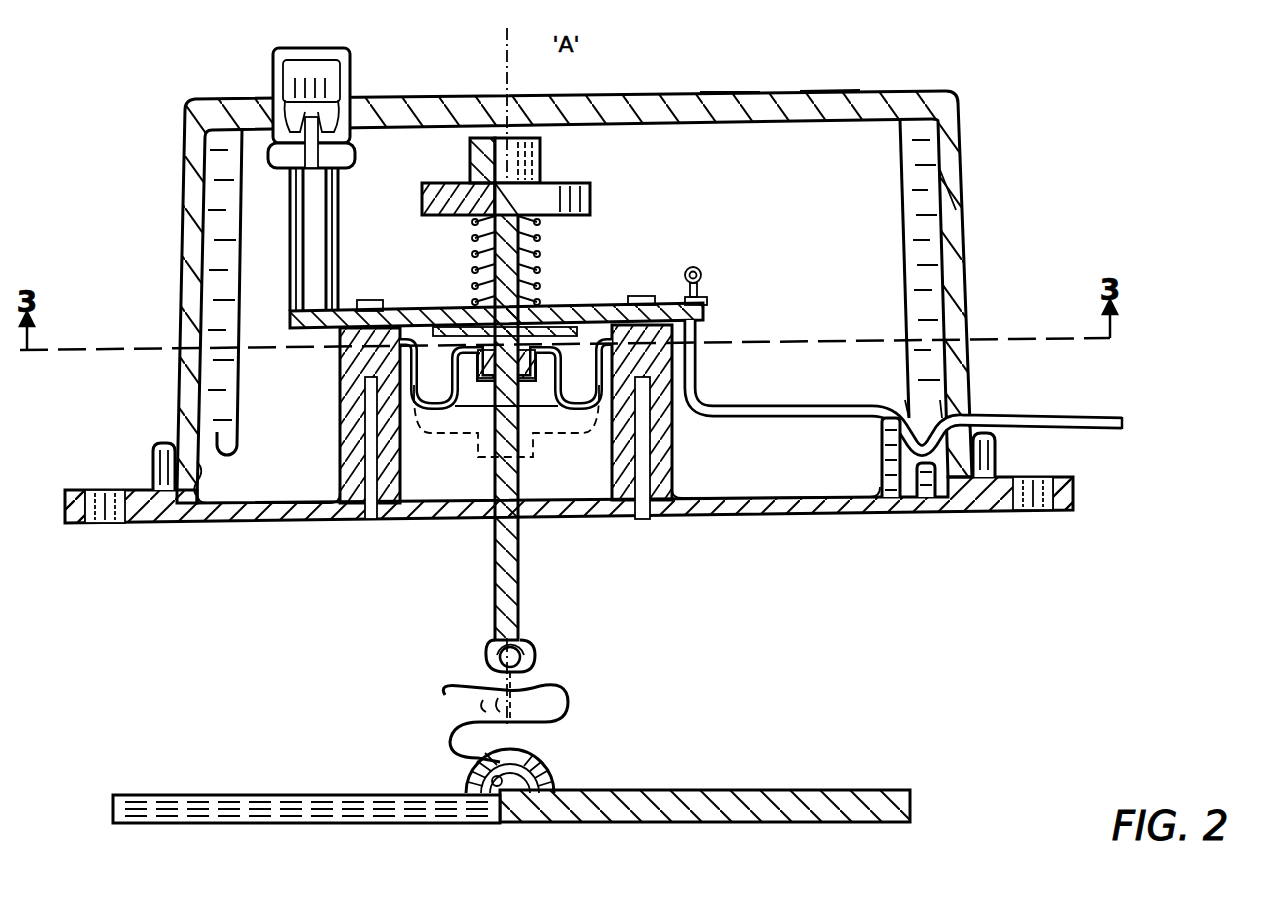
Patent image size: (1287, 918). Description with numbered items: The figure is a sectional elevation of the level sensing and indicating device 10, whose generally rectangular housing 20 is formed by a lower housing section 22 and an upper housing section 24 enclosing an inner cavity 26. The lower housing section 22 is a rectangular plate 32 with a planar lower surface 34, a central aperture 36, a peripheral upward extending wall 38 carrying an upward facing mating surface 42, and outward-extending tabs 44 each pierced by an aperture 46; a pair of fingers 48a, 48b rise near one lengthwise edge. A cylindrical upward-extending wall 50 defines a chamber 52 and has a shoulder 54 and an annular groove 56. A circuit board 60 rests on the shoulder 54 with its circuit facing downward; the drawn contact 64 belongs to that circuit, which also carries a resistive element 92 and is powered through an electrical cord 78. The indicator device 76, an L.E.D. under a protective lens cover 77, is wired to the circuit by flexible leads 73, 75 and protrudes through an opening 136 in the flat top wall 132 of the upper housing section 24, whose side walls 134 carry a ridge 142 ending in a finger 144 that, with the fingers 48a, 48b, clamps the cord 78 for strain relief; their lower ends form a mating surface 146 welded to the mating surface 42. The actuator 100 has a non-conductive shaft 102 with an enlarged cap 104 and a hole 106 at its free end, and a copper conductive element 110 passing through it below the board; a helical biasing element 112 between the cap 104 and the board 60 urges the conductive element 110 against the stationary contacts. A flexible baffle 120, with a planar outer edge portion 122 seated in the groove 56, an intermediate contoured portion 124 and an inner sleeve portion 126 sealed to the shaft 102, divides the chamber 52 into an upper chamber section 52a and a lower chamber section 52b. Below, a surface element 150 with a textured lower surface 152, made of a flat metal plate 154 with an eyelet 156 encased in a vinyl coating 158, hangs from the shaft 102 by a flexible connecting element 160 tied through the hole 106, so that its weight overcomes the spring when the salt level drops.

The level sensing and indicating device 10 is at (1066, 76).
The housing 20 is at (629, 297).
The lower housing section 22 is at (569, 531).
The upper housing section 24 is at (836, 60).
The inner cavity 26 is at (824, 191).
The rectangular plate 32 is at (733, 530).
The lower surface 34 is at (889, 529).
The aperture 36 is at (507, 469).
The upward extending wall 38 is at (1022, 455).
The upward facing mating surface 42 is at (122, 461).
The outward-extending tabs 44 is at (573, 531).
The aperture 46 is at (569, 522).
The upward extending finger 48a is at (853, 457).
The upward extending finger 48b is at (871, 476).
The upward-extending wall 50 is at (538, 414).
The chamber 52 is at (524, 452).
The upper chamber section 52a is at (399, 283).
The lower chamber section 52b is at (579, 547).
The upward extending shoulder 54 is at (739, 294).
The annular groove 56 is at (738, 327).
The circuit board 60 is at (496, 289).
The contact 64 is at (650, 270).
The flexible lead 73 is at (273, 239).
The flexible lead 75 is at (357, 239).
The indicator device 76 is at (352, 81).
The protective lens cover 77 is at (277, 93).
The electrical cord 78 is at (1060, 394).
The resistive element 92 is at (727, 264).
The actuator 100 is at (552, 195).
The shaft 102 is at (463, 411).
The cap 104 is at (559, 159).
The hole 106 is at (547, 643).
The conductive element 110 is at (906, 385).
The biasing element 112 is at (557, 255).
The baffle 120 is at (503, 438).
The outer edge portion 122 is at (420, 351).
The intermediate contoured portion 124 is at (399, 378).
The inner sleeve portion 126 is at (431, 415).
The top wall 132 is at (718, 72).
The side walls 134 is at (580, 287).
The opening 136 is at (197, 98).
The downward extending ridge 142 is at (993, 189).
The downward projecting finger 144 is at (884, 390).
The downward facing mating surface 146 is at (237, 479).
The surface element 150 is at (883, 727).
The lower surface 152 is at (705, 821).
The flat metal plate 154 is at (377, 824).
The eyelet 156 is at (550, 765).
The coating 158 is at (749, 764).
The connecting element 160 is at (558, 706).